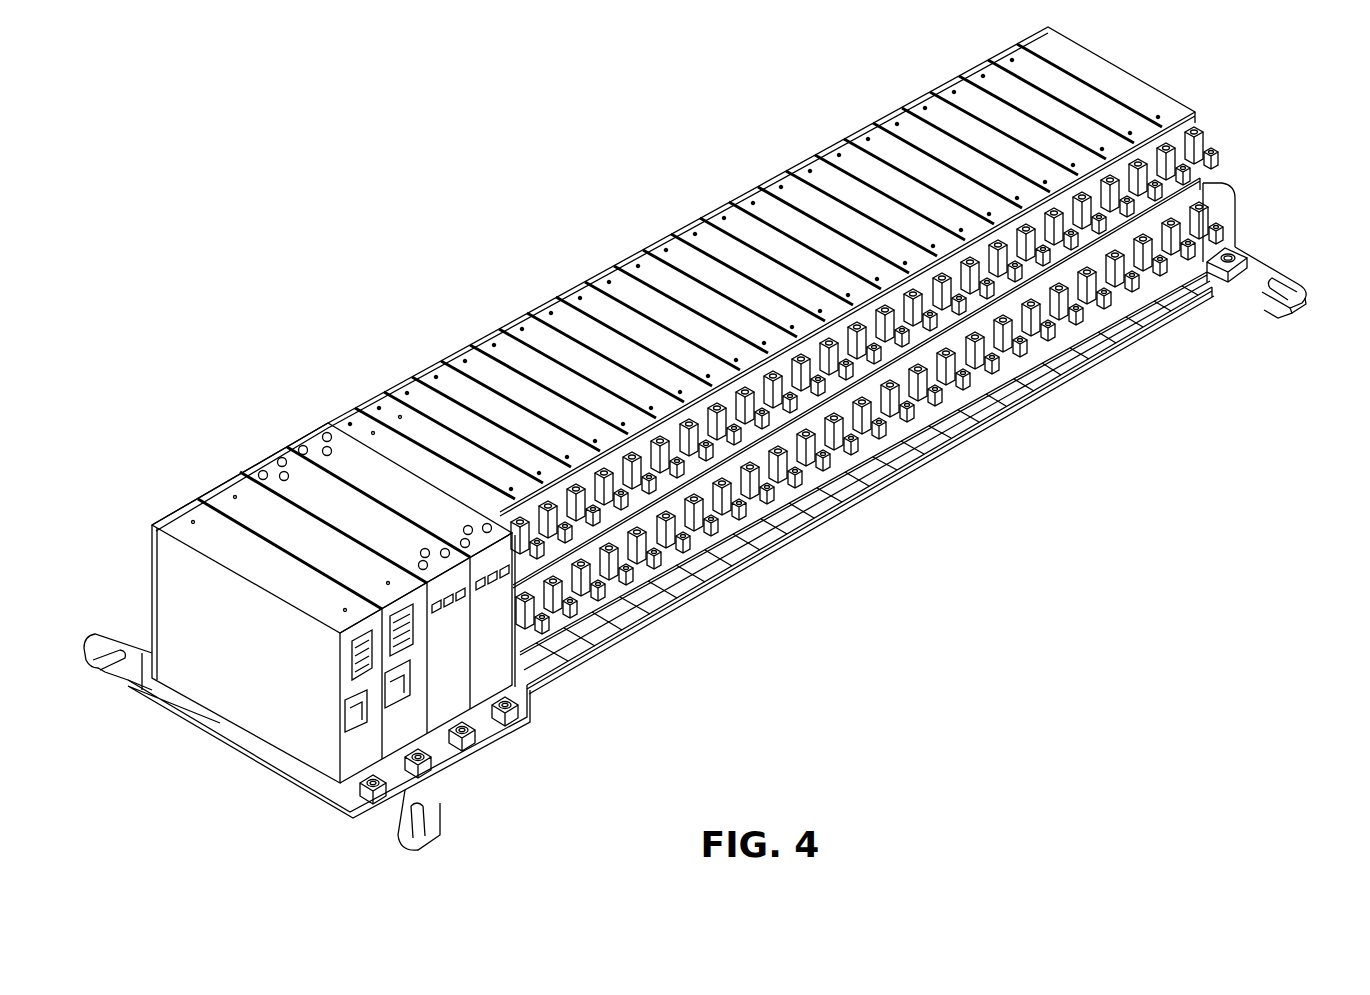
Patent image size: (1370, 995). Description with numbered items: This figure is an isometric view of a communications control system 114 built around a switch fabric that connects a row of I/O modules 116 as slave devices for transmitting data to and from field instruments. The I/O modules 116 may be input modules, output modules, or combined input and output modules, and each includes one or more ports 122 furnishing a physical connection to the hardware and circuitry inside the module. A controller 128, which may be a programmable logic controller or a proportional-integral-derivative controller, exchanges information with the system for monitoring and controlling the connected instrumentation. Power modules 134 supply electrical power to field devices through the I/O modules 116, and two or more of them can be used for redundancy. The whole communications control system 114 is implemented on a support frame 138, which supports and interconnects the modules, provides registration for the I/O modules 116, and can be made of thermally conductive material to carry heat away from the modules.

The communications control system 114 is at (260, 140).
The I/O modules 116 is at (736, 203).
The ports 122 is at (1162, 112).
The controller 128 is at (190, 500).
The power modules 134 is at (285, 445).
The support frame 138 is at (1266, 268).